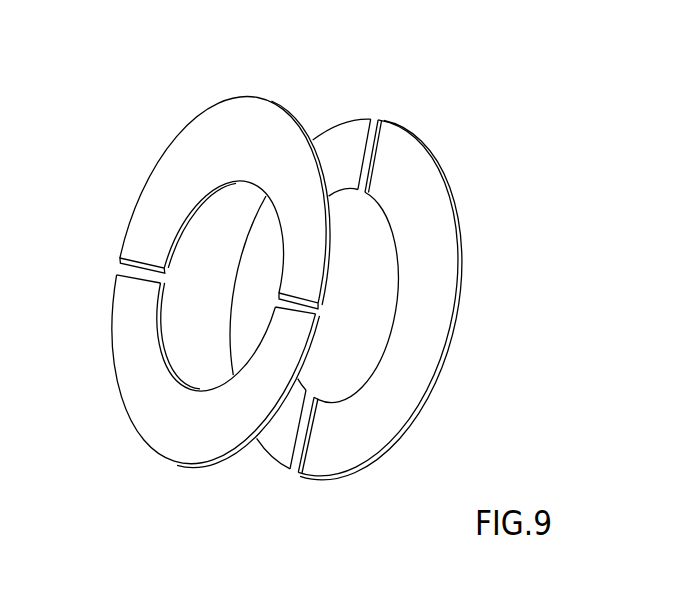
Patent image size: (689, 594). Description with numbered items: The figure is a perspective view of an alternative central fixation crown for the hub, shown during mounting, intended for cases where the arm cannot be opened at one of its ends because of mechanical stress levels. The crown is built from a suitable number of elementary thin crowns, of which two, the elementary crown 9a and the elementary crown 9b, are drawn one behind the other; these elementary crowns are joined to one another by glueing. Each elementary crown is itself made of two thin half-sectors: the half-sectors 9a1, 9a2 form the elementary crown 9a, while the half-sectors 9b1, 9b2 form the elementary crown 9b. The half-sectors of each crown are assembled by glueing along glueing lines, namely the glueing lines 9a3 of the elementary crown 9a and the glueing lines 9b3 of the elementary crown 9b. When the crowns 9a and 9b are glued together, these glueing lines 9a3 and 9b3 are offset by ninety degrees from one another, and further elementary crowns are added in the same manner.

The elementary thin crown 9a is at (208, 245).
The half-sector 9a1 is at (158, 220).
The half-sector 9a2 is at (134, 373).
The glueing lines 9a3 is at (208, 286).
The elementary thin crown 9b is at (364, 286).
The half-sector 9b1 is at (440, 293).
The half-sector 9b2 is at (243, 322).
The glueing lines 9b3 is at (342, 505).